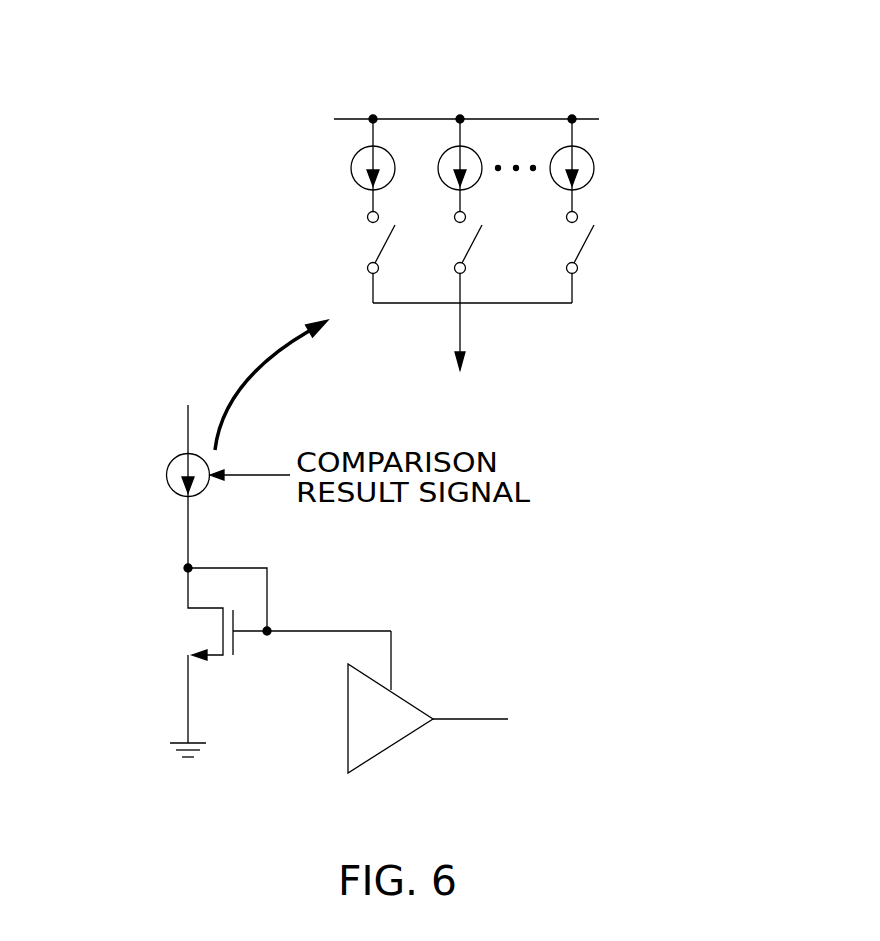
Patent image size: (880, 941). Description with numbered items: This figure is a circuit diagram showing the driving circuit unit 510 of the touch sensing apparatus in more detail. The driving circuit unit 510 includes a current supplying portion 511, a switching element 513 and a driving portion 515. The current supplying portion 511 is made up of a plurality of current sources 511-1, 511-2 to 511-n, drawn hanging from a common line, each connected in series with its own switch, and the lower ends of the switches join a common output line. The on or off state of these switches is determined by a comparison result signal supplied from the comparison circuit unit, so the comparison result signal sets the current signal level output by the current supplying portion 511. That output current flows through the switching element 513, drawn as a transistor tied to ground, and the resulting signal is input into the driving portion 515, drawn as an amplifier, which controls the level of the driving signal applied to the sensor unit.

The driving circuit unit 510 is at (630, 131).
The current source 511-1 is at (358, 152).
The current source 511-2 is at (445, 152).
The current source 511-n is at (556, 152).
The current supplying portion 511 is at (171, 464).
The switching element 513 is at (171, 618).
The driving portion 515 is at (348, 720).